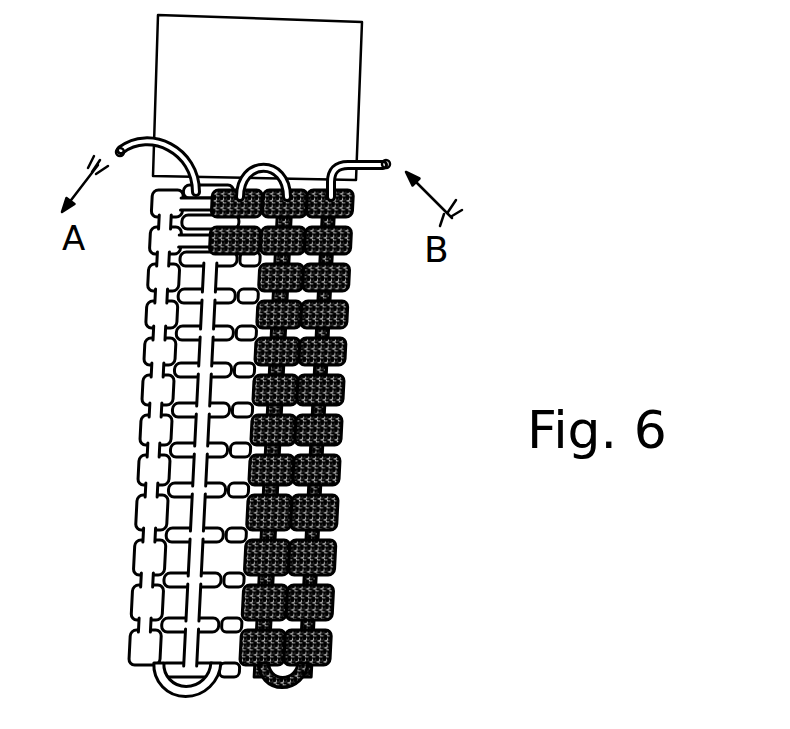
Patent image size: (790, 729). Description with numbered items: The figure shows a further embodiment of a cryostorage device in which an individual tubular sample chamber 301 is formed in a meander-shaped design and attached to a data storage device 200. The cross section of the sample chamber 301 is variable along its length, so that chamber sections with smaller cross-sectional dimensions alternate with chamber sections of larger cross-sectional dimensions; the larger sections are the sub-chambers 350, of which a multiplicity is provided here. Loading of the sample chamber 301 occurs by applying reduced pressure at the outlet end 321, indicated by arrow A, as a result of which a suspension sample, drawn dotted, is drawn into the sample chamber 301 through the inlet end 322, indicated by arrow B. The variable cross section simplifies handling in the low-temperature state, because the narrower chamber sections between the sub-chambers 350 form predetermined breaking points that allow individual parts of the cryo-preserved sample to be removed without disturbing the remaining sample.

The data storage device 200 is at (485, 67).
The tubular sample chamber 301 is at (301, 441).
The outlet end 321 is at (126, 147).
The inlet end 322 is at (392, 162).
The sub-chamber 350 is at (347, 313).